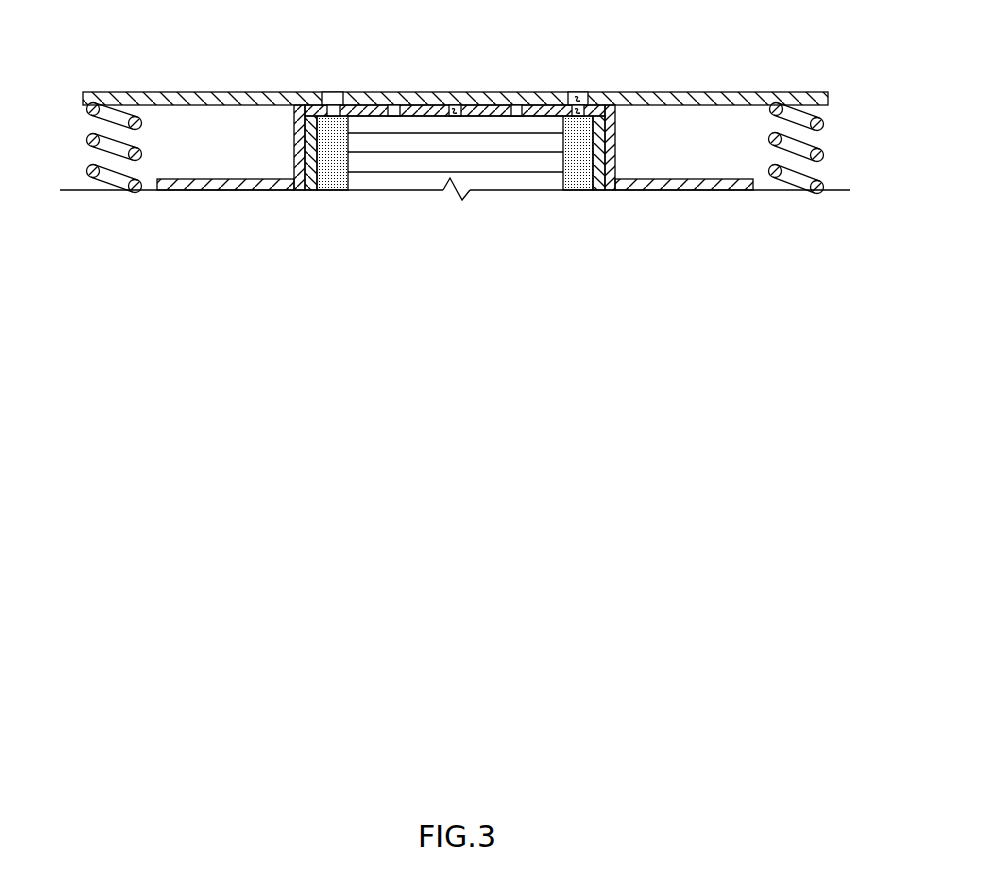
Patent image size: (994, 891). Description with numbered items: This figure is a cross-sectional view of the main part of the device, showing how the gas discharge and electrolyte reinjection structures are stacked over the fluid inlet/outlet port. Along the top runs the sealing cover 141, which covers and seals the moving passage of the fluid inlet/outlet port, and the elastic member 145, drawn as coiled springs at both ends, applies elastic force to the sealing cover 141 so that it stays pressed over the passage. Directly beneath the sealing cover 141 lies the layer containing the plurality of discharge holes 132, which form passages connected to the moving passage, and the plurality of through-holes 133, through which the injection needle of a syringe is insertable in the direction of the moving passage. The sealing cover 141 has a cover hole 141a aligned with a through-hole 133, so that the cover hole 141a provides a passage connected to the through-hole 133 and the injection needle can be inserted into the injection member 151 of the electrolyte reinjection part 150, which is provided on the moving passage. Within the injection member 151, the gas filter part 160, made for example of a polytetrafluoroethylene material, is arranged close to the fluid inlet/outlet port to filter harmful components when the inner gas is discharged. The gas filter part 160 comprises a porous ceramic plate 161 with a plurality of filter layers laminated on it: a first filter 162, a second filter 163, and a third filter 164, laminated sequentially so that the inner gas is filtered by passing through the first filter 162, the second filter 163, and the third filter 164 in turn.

The sealing cover 141 is at (455, 66).
The cover hole 141a is at (577, 98).
The discharge hole 132 is at (455, 107).
The through-hole 133 is at (585, 107).
The elastic member 145 is at (823, 153).
The electrolyte reinjection part 150 is at (474, 193).
The injection member 151 is at (579, 183).
The gas filter part 160 is at (455, 205).
The porous ceramic plate 161 is at (375, 253).
The first filter 162 is at (474, 163).
The second filter 163 is at (424, 150).
The third filter 164 is at (377, 122).